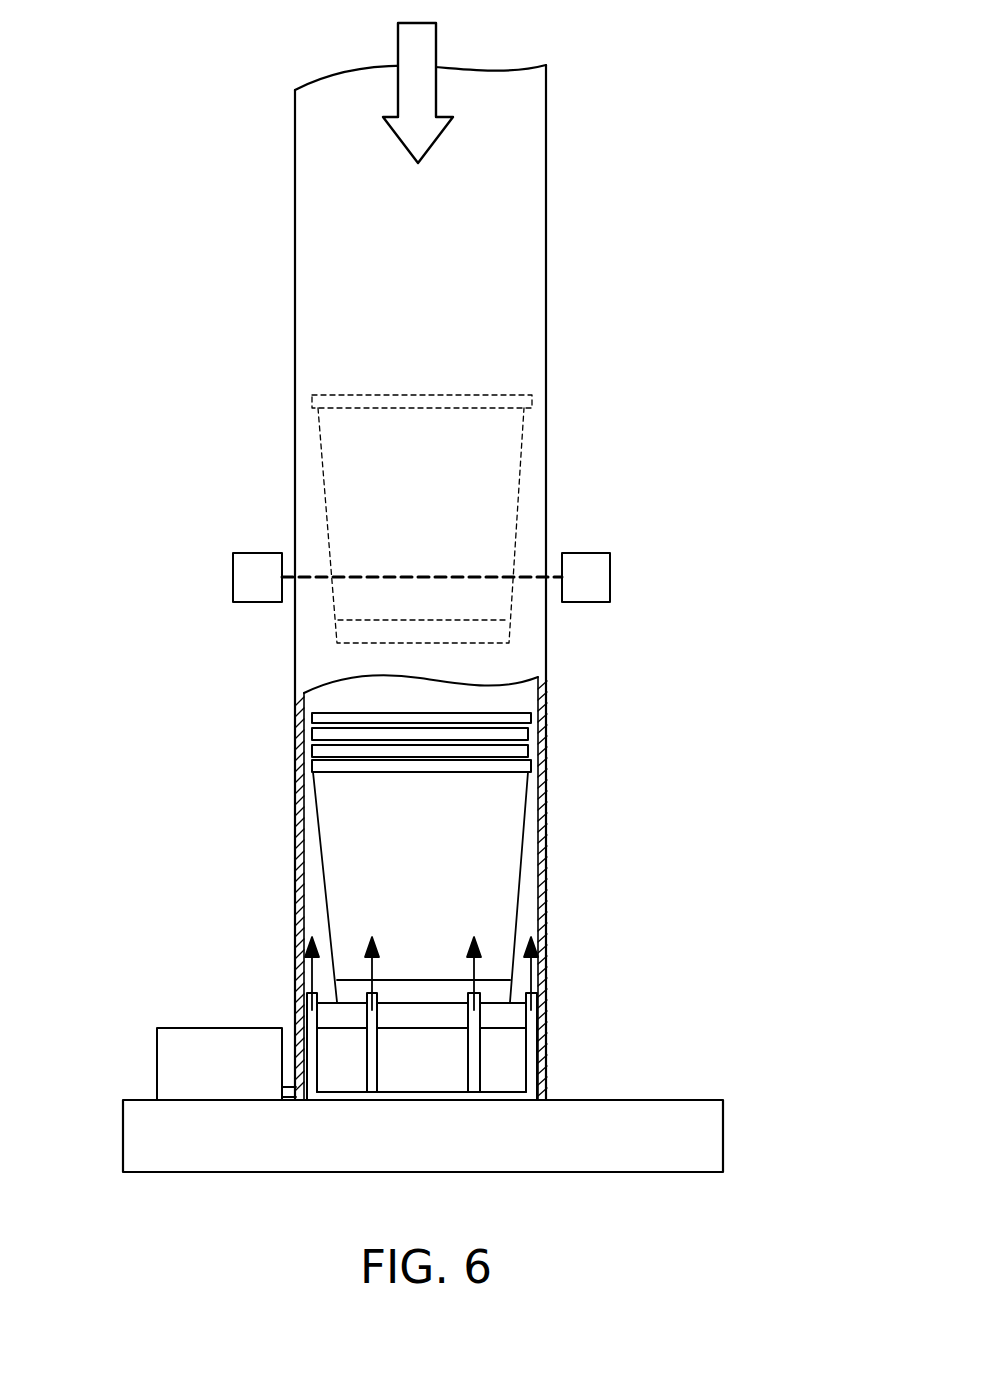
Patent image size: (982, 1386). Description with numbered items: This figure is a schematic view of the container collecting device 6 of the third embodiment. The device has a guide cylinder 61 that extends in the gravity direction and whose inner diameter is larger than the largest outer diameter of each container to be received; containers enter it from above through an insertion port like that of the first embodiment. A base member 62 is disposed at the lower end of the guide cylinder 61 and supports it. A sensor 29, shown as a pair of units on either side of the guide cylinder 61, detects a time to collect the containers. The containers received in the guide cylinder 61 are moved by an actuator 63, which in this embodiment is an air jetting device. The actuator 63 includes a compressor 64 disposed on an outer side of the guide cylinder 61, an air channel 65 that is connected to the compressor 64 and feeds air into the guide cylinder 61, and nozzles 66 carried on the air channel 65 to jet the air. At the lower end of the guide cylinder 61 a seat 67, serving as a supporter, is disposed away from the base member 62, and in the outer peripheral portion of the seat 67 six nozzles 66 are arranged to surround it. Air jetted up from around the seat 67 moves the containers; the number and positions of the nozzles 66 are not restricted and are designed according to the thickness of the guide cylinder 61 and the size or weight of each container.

The container collecting device 6 is at (394, 624).
The guide cylinder 61 is at (294, 204).
The sensor 29 is at (243, 553).
The base member 62 is at (123, 1138).
The actuator 63 is at (202, 1035).
The compressor 64 is at (175, 1066).
The air channel 65 is at (430, 1081).
The nozzles 66 is at (312, 1022).
The seat 67 is at (503, 1018).